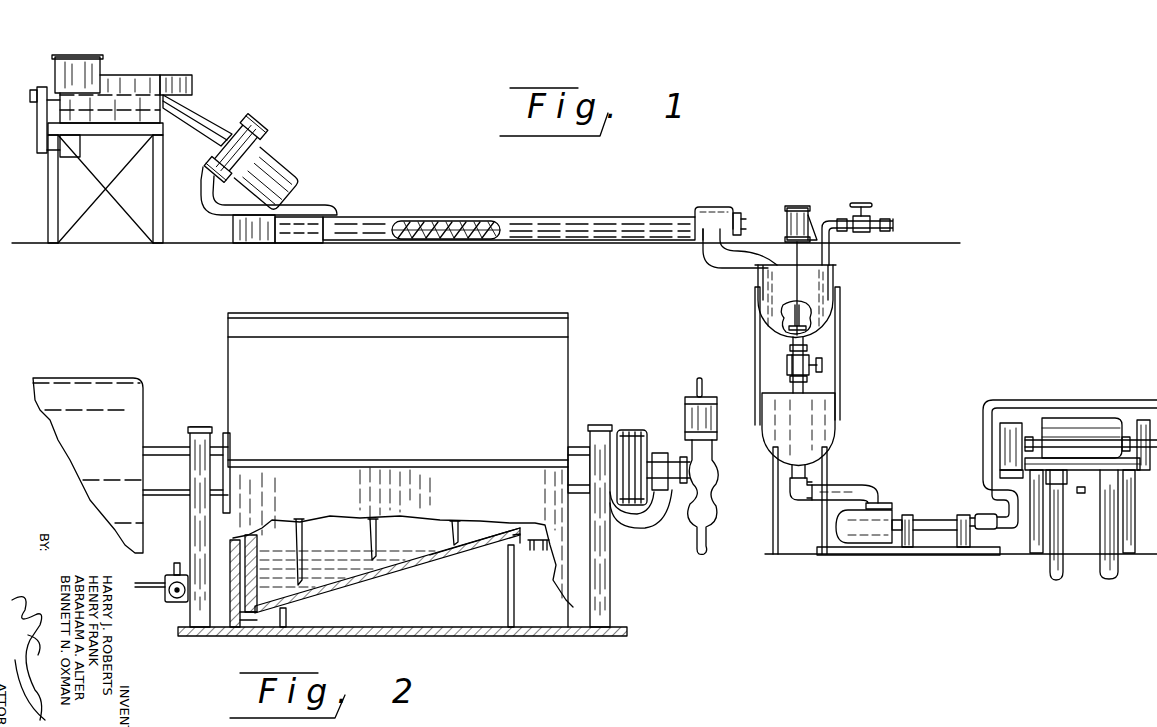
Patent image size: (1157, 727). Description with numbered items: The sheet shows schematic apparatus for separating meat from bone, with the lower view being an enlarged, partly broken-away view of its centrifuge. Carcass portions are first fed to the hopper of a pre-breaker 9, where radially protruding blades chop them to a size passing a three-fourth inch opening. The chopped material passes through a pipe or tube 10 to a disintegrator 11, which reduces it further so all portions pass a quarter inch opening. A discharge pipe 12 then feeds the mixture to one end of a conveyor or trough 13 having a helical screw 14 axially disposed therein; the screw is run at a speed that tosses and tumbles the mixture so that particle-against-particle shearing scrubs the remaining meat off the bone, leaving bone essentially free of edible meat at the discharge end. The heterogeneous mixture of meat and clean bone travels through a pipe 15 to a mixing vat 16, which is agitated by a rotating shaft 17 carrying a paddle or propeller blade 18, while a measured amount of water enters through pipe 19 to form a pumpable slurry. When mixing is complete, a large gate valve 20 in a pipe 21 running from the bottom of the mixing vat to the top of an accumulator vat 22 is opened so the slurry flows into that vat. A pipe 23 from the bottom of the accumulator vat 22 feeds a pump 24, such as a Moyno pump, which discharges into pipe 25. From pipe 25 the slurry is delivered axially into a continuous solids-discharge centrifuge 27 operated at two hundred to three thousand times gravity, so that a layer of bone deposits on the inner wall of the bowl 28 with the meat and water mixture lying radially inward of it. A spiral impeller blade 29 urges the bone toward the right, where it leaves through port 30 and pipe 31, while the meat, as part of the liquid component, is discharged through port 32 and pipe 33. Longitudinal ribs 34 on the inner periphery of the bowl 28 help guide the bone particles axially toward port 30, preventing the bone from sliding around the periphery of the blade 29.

In FIG. 1, the pre-breaker 9 is at (134, 76).
In FIG. 1, the pipe or tube 10 is at (216, 112).
In FIG. 1, the disintegrator 11 is at (263, 128).
In FIG. 1, the discharge pipe 12 is at (314, 206).
In FIG. 1, the conveyor or trough 13 is at (390, 216).
In FIG. 1, the helical screw 14 is at (457, 222).
In FIG. 1, the pipe 15 is at (709, 249).
In FIG. 1, the mixing vat 16 is at (765, 274).
In FIG. 1, the rotating shaft 17 is at (790, 250).
In FIG. 1, the paddle or propeller blade 18 is at (795, 303).
In FIG. 1, the pipe 19 is at (878, 224).
In FIG. 1, the gate valve 20 is at (812, 374).
In FIG. 1, the pipe 21 is at (807, 350).
In FIG. 1, the accumulator vat 22 is at (830, 427).
In FIG. 1, the pipe 23 is at (847, 490).
In FIG. 1, the pump 24 is at (921, 520).
In FIG. 1, the pipe 25 is at (1041, 402).
In FIG. 1, the continuous solids-discharge centrifuge 27 is at (1093, 415).
In FIG. 2, the continuous solids-discharge centrifuge 27 is at (576, 369).
In FIG. 2, the bowl 28 is at (346, 584).
In FIG. 2, the spiral impeller blade 29 is at (380, 545).
In FIG. 2, the port 30 is at (535, 532).
In FIG. 1, the pipe 31 is at (1120, 568).
In FIG. 2, the port 32 is at (262, 536).
In FIG. 1, the pipe 33 is at (1052, 566).
In FIG. 2, the longitudinal ribs 34 is at (441, 552).